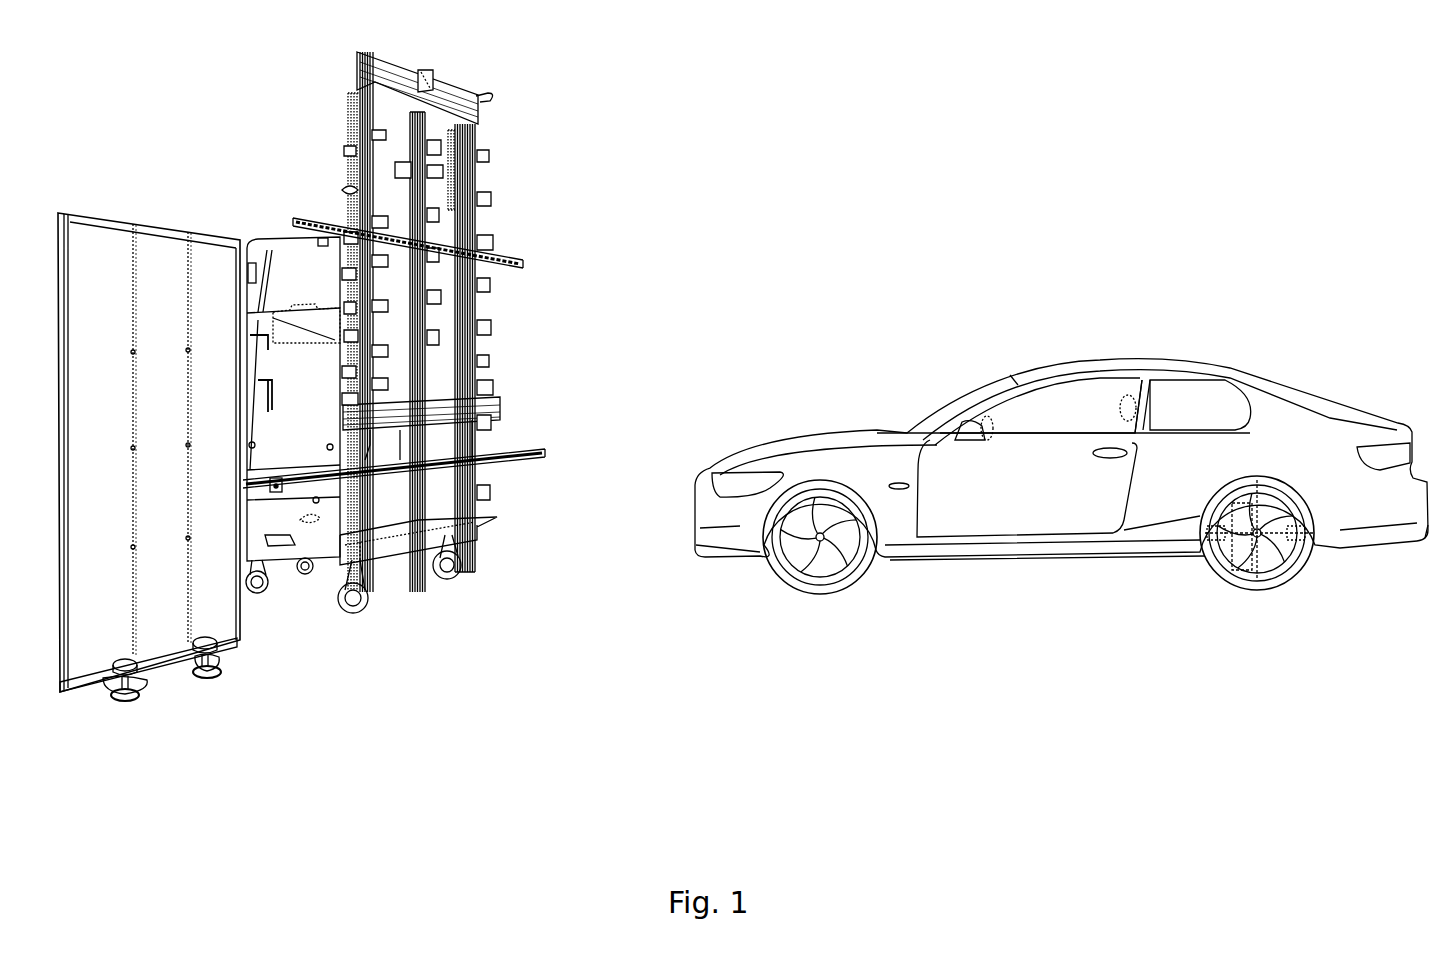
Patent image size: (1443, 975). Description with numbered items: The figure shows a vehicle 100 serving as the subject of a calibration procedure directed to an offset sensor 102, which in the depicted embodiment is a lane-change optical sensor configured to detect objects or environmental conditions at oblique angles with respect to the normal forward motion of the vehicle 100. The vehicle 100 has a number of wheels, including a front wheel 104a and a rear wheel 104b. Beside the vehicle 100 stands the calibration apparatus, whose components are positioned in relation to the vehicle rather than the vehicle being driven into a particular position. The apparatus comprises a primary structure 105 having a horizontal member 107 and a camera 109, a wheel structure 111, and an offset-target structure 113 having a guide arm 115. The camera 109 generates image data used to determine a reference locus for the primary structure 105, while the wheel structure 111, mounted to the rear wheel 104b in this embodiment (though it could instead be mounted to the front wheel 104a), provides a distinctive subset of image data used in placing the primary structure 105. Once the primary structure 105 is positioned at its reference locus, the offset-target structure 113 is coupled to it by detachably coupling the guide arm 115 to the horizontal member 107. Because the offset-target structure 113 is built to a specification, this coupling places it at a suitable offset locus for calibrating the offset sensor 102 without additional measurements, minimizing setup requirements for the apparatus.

The vehicle 100 is at (903, 375).
The offset sensor 102 is at (910, 483).
The front wheel 104a is at (770, 553).
The rear wheel 104b is at (1210, 557).
The primary structure 105 is at (280, 140).
The horizontal member 107 is at (553, 460).
The camera 109 is at (437, 82).
The wheel structure 111 is at (1243, 567).
The offset-target structure 113 is at (228, 632).
The guide arm 115 is at (268, 488).